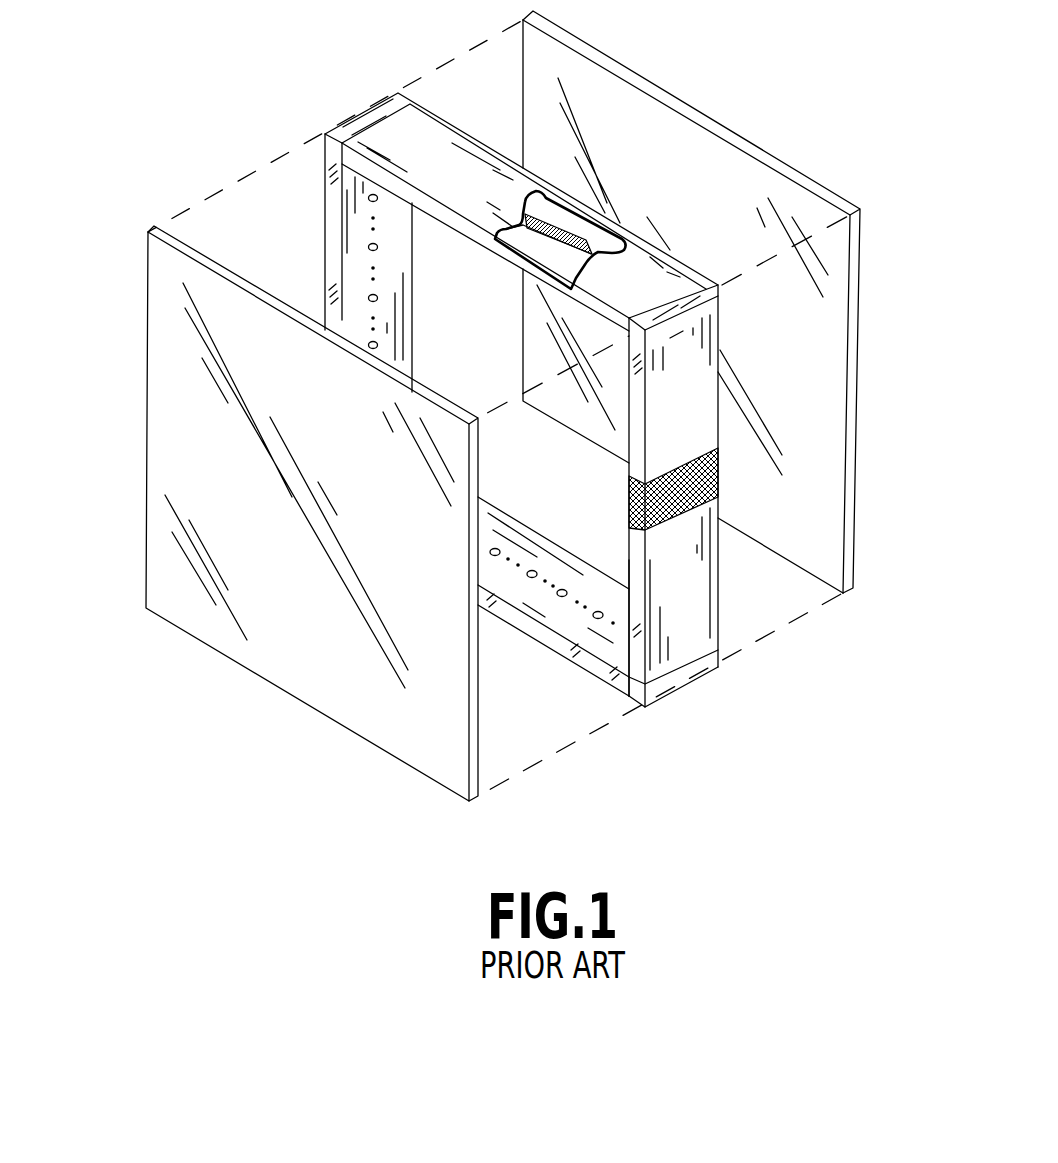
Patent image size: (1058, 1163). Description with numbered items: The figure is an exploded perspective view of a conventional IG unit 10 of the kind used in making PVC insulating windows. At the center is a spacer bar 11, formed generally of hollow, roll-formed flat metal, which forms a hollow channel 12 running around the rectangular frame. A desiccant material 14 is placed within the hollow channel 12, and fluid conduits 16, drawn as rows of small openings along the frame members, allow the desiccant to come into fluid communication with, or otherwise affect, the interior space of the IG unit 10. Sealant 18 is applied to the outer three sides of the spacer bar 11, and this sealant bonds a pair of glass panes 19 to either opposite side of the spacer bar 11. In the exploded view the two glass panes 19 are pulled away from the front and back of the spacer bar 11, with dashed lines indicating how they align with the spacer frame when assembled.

The IG unit 10 is at (488, 411).
The spacer bar 11 is at (685, 633).
The hollow channel 12 is at (576, 433).
The desiccant material 14 is at (562, 211).
The fluid conduits 16 is at (375, 197).
The sealant 18 is at (718, 478).
The glass panes 19 is at (155, 432).